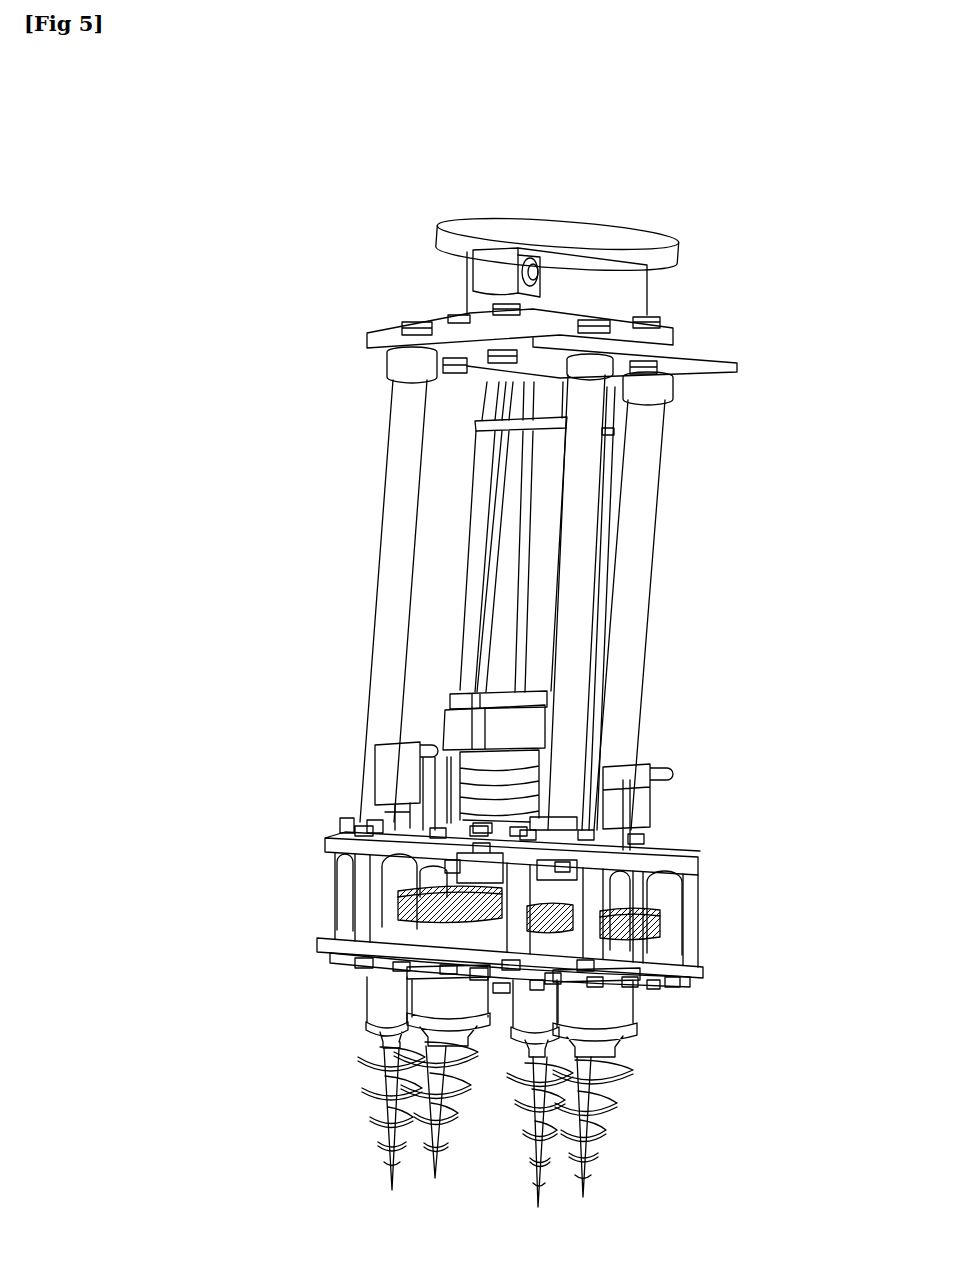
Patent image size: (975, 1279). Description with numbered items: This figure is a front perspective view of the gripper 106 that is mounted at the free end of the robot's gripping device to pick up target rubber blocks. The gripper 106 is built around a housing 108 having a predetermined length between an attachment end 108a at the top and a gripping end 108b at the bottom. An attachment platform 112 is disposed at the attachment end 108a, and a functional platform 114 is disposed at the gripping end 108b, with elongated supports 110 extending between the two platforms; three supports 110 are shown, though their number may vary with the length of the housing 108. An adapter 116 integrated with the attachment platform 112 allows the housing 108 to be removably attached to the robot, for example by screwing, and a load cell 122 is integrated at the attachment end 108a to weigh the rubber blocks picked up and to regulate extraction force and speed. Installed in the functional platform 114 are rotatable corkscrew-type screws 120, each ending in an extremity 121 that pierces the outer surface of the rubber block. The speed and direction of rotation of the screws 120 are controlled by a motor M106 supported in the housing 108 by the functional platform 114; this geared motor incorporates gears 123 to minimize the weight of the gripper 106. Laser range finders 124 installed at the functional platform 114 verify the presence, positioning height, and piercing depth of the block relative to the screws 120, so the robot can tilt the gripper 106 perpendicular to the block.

The gripper 106 is at (309, 229).
The adapter 116 is at (657, 245).
The load cell 122 is at (497, 265).
The attachment platform 112 is at (673, 329).
The attachment end 108a is at (390, 356).
The housing 108 is at (382, 428).
The supports 110 is at (635, 563).
The motor M106 is at (543, 498).
The laser range finder 124 is at (395, 773).
The gripping end 108b is at (350, 826).
The functional platform 114 is at (690, 865).
The gears 123 is at (413, 903).
The extremity 121 is at (440, 1106).
The screws 120 is at (547, 1111).